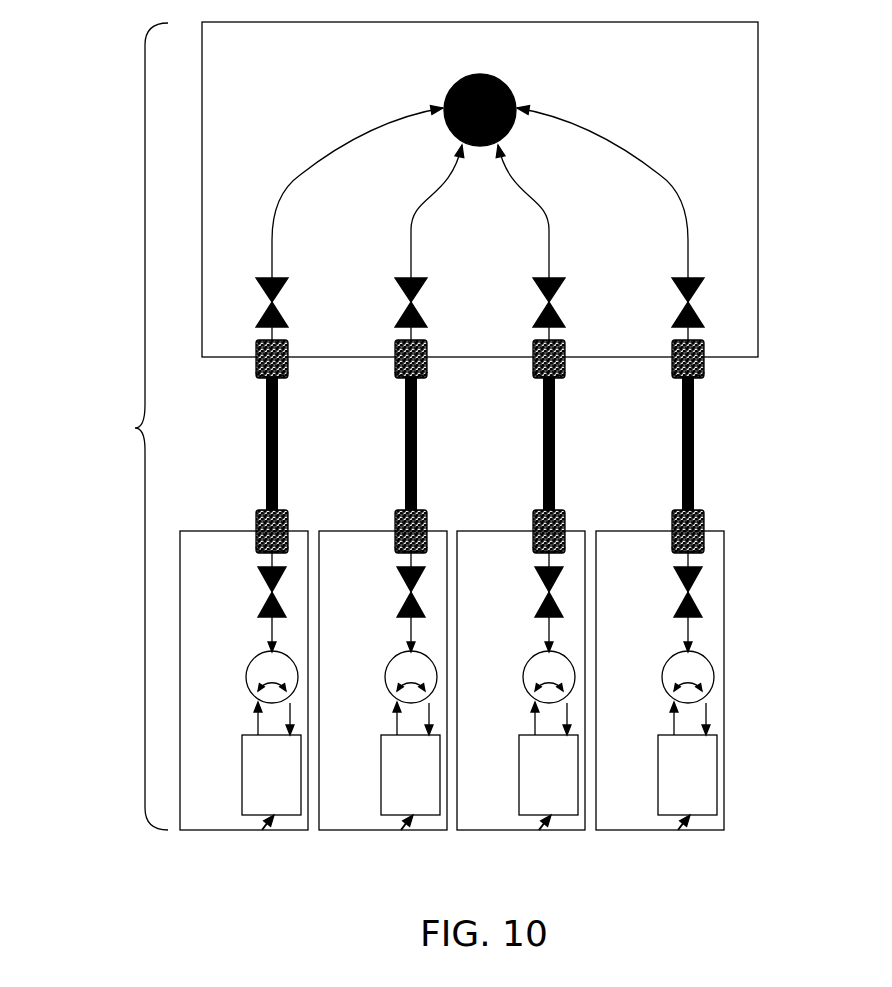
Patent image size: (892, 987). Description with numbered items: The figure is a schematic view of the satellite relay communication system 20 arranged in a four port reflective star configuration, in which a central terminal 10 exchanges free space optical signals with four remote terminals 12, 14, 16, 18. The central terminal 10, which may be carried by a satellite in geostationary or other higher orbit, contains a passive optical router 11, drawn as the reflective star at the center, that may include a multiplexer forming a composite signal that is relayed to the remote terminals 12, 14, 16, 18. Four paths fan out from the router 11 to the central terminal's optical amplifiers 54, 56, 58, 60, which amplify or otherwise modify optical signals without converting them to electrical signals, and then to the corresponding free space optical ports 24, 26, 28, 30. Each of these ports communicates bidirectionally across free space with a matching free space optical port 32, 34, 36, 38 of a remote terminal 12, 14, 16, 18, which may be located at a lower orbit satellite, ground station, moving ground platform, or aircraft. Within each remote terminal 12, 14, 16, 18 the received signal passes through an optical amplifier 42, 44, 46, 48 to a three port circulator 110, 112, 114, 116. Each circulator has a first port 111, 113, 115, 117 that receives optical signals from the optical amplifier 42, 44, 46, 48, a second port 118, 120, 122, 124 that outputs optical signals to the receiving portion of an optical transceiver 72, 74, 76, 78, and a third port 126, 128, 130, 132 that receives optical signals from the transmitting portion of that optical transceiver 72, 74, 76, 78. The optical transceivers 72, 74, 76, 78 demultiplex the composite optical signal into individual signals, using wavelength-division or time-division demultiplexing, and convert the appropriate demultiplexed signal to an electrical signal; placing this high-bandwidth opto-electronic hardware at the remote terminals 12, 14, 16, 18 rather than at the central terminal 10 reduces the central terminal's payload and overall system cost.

The central terminal 10 is at (758, 95).
The router 11 is at (513, 88).
The satellite relay communication system 20 is at (133, 428).
The remote terminal 12 is at (236, 832).
The remote terminal 14 is at (416, 709).
The remote terminal 16 is at (554, 709).
The remote terminal 18 is at (692, 709).
The free space optical port 24 is at (287, 383).
The free space optical port 26 is at (431, 425).
The free space optical port 28 is at (569, 425).
The free space optical port 30 is at (708, 425).
The free space optical port 32 is at (287, 507).
The free space optical port 34 is at (431, 508).
The free space optical port 36 is at (569, 508).
The free space optical port 38 is at (708, 508).
The optical amplifier 42 is at (268, 592).
The optical amplifier 44 is at (389, 585).
The optical amplifier 46 is at (527, 585).
The optical amplifier 48 is at (666, 585).
The optical amplifier 54 is at (287, 317).
The optical amplifier 56 is at (430, 307).
The optical amplifier 58 is at (568, 307).
The optical amplifier 60 is at (707, 307).
The optical transceiver 72 is at (283, 836).
The optical transceiver 74 is at (437, 841).
The optical transceiver 76 is at (575, 841).
The optical transceiver 78 is at (714, 841).
The three port circulator 110 is at (250, 676).
The three port circulator 112 is at (382, 669).
The three port circulator 114 is at (520, 669).
The three port circulator 116 is at (659, 669).
The first port 111 is at (268, 648).
The first port 113 is at (379, 623).
The first port 115 is at (517, 623).
The first port 117 is at (656, 623).
The second port 118 is at (297, 690).
The second port 120 is at (469, 706).
The second port 122 is at (607, 706).
The second port 124 is at (745, 701).
The third port 126 is at (253, 702).
The third port 128 is at (364, 742).
The third port 130 is at (502, 742).
The third port 132 is at (641, 742).